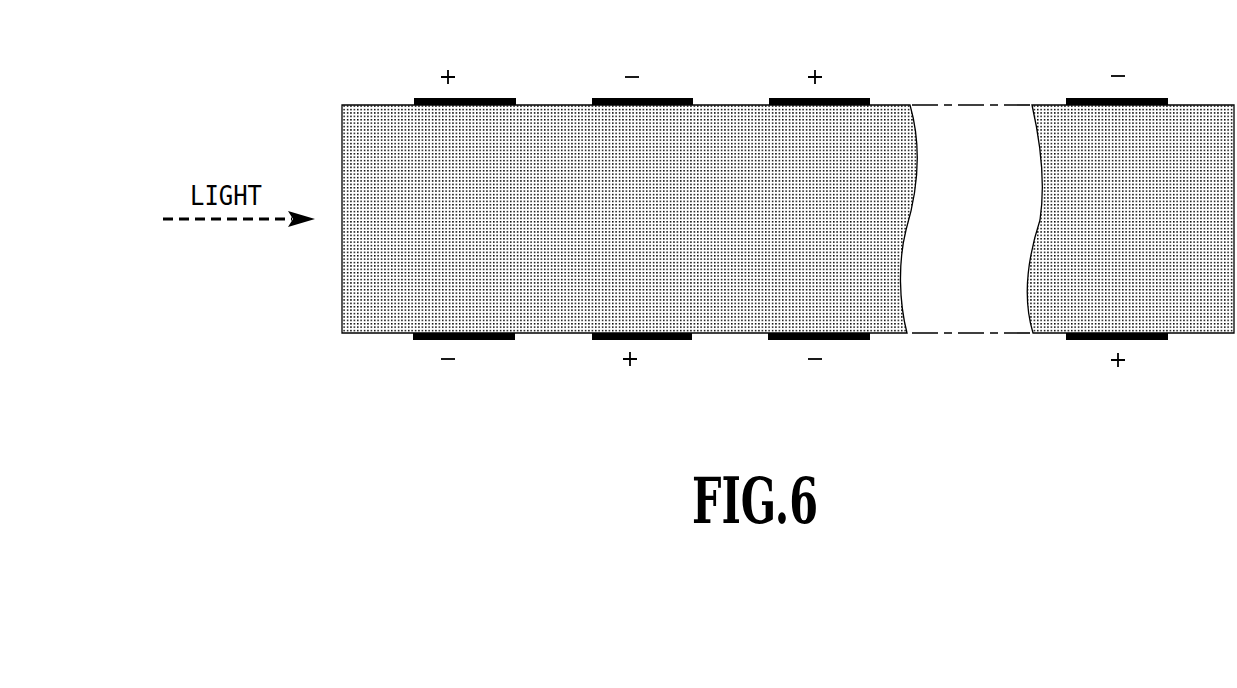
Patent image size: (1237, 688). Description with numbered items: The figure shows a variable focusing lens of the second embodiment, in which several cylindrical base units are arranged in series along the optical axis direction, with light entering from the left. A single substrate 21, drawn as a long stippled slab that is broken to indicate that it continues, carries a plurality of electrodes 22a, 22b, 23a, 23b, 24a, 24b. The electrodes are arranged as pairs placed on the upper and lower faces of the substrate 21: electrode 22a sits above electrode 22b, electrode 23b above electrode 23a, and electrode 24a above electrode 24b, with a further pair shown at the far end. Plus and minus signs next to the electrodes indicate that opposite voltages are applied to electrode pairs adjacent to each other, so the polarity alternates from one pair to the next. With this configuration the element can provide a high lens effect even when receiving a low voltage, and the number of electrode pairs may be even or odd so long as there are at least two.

The substrate 21 is at (378, 104).
The electrode 22a is at (501, 97).
The electrode 22b is at (498, 341).
The electrode 23a is at (672, 341).
The electrode 23b is at (673, 97).
The electrode 24a is at (855, 97).
The electrode 24b is at (855, 341).